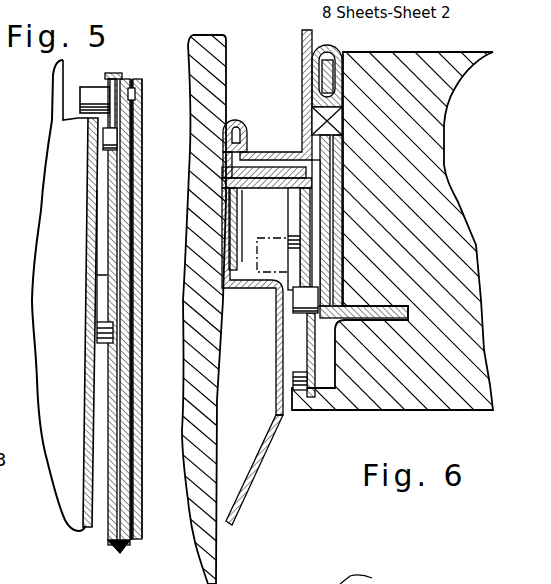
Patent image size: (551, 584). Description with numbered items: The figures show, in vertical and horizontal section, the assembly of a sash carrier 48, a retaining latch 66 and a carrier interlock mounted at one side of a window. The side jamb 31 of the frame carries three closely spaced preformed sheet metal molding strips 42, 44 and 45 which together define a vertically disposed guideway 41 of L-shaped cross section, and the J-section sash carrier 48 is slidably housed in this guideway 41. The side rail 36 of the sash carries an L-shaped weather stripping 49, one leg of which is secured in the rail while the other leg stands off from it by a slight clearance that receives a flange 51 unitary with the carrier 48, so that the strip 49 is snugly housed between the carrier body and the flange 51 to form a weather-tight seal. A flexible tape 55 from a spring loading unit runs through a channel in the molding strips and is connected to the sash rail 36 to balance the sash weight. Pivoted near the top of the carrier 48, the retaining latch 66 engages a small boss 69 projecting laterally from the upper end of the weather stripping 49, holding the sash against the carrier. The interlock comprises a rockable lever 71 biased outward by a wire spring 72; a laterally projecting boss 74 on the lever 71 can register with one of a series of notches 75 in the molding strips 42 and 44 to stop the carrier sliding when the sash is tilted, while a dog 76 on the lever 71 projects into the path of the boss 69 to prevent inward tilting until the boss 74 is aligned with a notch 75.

In FIG. 6, the side jamb 31 is at (210, 415).
In FIG. 6, the side rail 36 is at (440, 410).
In FIG. 6, the guideway 41 is at (228, 170).
In FIG. 6, the molding strip 42 is at (262, 455).
In FIG. 6, the molding strip 44 is at (302, 81).
In FIG. 6, the molding strip 45 is at (352, 582).
In FIG. 6, the sash carrier 48 is at (275, 168).
In FIG. 5, the weather stripping 49 is at (136, 184).
In FIG. 6, the weather stripping 49 is at (371, 311).
In FIG. 5, the flange 51 is at (124, 224).
In FIG. 6, the flange 51 is at (343, 241).
In FIG. 6, the tape 55 is at (238, 204).
In FIG. 5, the retaining latch 66 is at (120, 77).
In FIG. 6, the retaining latch 66 is at (323, 122).
In FIG. 5, the boss 69 is at (104, 143).
In FIG. 6, the boss 69 is at (280, 324).
In FIG. 5, the rockable lever 71 is at (112, 247).
In FIG. 5, the wire spring 72 is at (93, 530).
In FIG. 5, the boss 74 is at (87, 93).
In FIG. 5, the notch 75 is at (62, 122).
In FIG. 6, the dog 76 is at (312, 409).